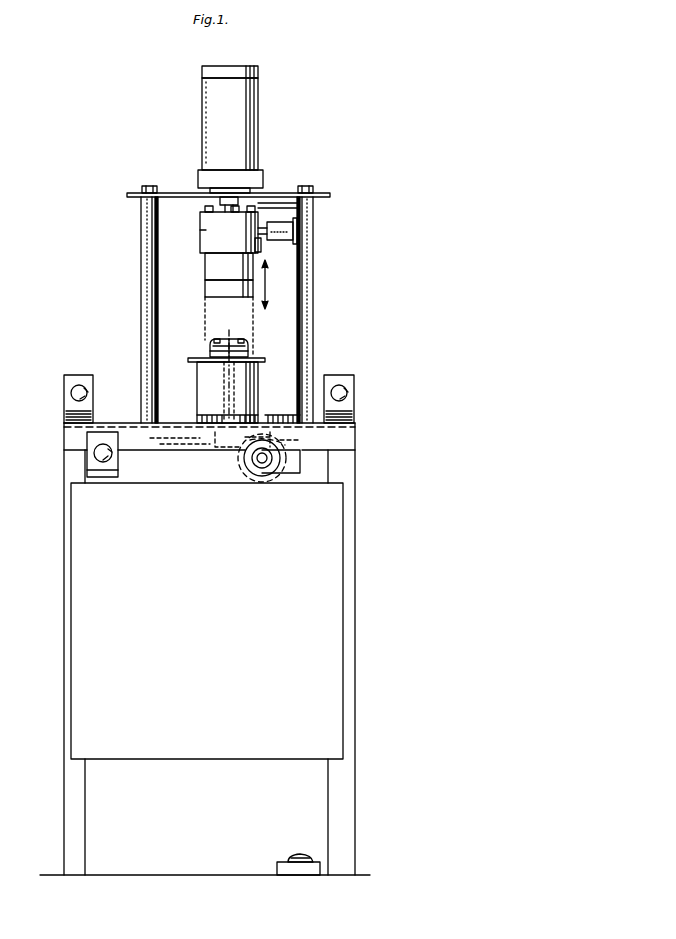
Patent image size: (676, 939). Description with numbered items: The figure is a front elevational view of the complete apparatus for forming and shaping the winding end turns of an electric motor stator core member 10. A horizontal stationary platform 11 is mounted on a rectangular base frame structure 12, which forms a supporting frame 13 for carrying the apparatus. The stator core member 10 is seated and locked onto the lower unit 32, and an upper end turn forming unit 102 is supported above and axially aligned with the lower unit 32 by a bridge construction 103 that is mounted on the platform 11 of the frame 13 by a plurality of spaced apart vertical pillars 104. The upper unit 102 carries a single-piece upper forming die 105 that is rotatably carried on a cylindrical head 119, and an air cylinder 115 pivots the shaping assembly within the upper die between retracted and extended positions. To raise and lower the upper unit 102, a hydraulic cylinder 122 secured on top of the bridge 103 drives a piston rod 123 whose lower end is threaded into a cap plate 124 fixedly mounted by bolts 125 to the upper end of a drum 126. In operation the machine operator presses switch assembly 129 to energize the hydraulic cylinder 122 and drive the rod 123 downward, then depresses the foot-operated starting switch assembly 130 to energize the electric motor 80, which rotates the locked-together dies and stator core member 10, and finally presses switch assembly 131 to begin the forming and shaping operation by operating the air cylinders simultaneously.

The electric motor stator core member 10 is at (250, 357).
The horizontal stationary platform 11 is at (115, 422).
The rectangular base frame structure 12 is at (345, 470).
The supporting frame 13 is at (310, 519).
The lower unit 32 is at (258, 392).
The electric motor 80 is at (247, 460).
The upper end turn forming unit 102 is at (260, 246).
The bridge construction 103 is at (285, 193).
The vertical pillars 104 is at (141, 303).
The upper forming die 105 is at (214, 288).
The air cylinder 115 is at (283, 230).
The cylindrical head 119 is at (216, 266).
The hydraulic cylinder 122 is at (258, 125).
The piston rod 123 is at (228, 201).
The cap plate 124 is at (204, 218).
The bolts 125 is at (205, 209).
The drum 126 is at (206, 230).
The switch assembly 129 is at (77, 377).
The starting switch assembly 130 is at (294, 855).
The switch assembly 131 is at (95, 455).